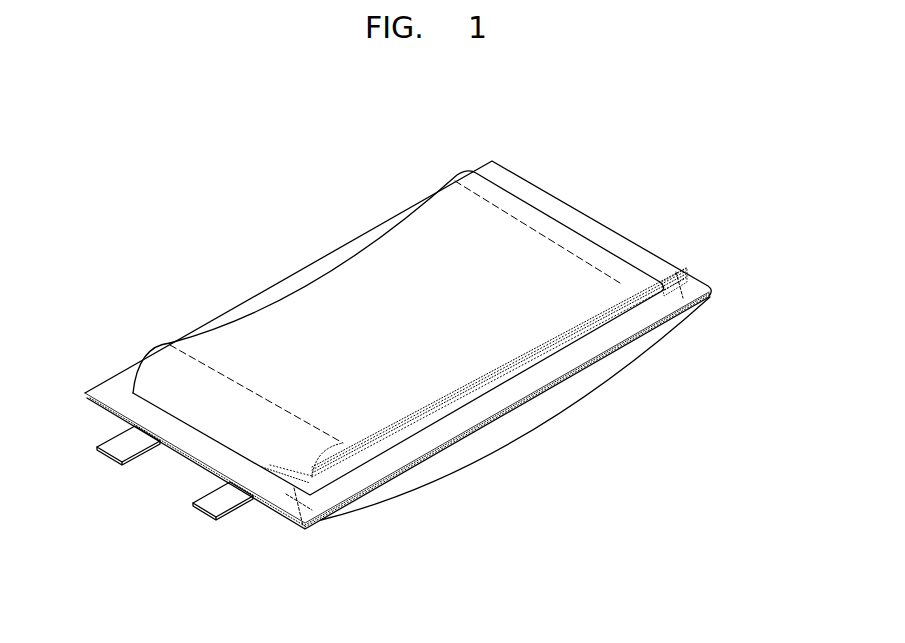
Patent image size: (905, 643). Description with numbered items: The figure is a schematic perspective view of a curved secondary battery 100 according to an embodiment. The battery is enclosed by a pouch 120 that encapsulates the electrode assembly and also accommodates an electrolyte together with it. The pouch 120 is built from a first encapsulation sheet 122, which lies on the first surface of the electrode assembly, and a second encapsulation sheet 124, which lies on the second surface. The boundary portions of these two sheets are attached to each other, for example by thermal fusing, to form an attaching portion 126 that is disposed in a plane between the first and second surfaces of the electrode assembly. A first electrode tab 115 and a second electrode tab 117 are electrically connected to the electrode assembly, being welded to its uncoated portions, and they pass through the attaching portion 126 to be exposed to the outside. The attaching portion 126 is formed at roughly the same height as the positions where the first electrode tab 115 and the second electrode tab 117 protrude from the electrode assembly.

The curved secondary battery 100 is at (189, 207).
The first electrode tab 115 is at (106, 456).
The second electrode tab 117 is at (207, 513).
The pouch 120 is at (777, 243).
The first encapsulation sheet 122 is at (665, 287).
The second encapsulation sheet 124 is at (607, 362).
The attaching portion 126 is at (670, 304).